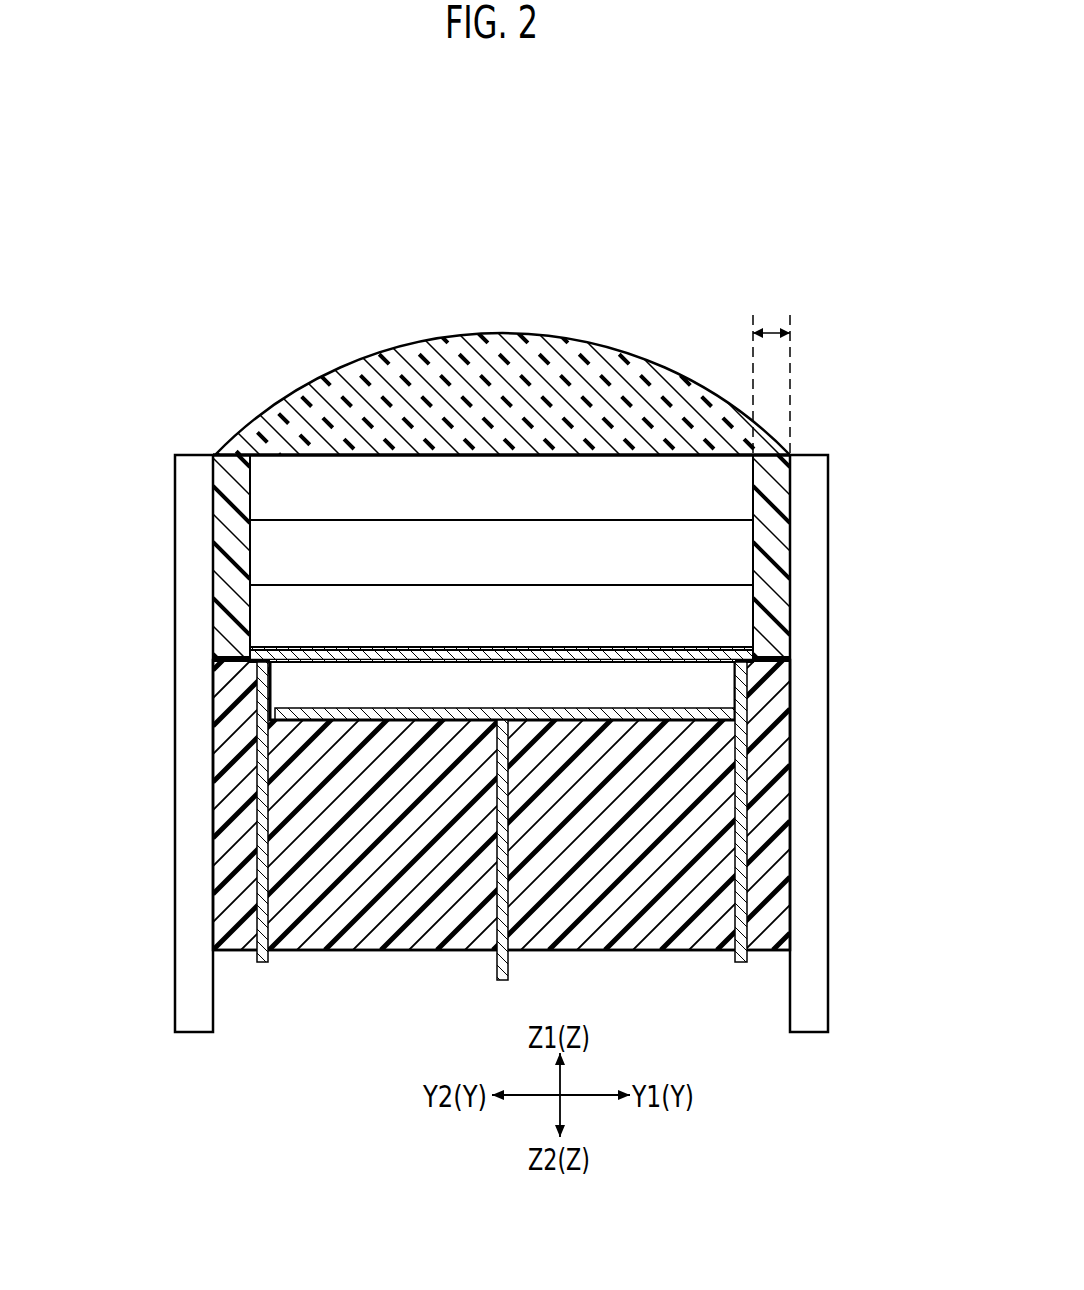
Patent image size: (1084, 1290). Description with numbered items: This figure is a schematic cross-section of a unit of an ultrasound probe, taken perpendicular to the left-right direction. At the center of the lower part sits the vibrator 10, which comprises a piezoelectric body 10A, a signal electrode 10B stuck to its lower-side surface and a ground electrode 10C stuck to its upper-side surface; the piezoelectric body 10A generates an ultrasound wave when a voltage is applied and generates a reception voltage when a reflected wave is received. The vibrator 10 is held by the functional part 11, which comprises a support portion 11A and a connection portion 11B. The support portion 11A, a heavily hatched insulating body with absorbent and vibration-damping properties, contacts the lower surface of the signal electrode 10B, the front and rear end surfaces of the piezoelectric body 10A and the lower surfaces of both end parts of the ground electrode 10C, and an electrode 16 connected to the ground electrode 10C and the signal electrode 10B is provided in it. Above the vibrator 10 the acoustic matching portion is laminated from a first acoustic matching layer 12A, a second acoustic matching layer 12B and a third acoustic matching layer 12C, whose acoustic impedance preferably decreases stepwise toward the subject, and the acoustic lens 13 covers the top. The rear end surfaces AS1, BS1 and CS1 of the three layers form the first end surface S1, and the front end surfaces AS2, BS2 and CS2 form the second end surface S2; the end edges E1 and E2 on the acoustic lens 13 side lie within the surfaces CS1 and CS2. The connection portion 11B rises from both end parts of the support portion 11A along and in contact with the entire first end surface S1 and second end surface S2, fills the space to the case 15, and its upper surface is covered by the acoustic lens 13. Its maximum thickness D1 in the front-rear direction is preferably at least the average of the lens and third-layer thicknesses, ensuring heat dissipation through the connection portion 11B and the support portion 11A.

The vibrator 10 is at (108, 640).
The piezoelectric body 10A is at (295, 684).
The signal electrode 10B is at (352, 720).
The ground electrode 10C is at (222, 658).
The functional part 11 is at (355, 955).
The support portion 11A is at (423, 930).
The connection portion 11B is at (782, 640).
The first acoustic matching layer 12A is at (532, 636).
The second acoustic matching layer 12B is at (532, 571).
The third acoustic matching layer 12C is at (532, 506).
The acoustic lens 13 is at (556, 360).
The case 15 is at (214, 985).
The electrode 16 is at (745, 965).
The end edge E1 is at (748, 440).
The end edge E2 is at (246, 428).
The maximum thickness D1 is at (771, 372).
The first end surface S1 is at (912, 425).
The rear end surface CS1 is at (790, 498).
The rear end surface BS1 is at (792, 533).
The rear end surface AS1 is at (780, 628).
The second end surface S2 is at (88, 365).
The front end surface CS2 is at (222, 478).
The front end surface BS2 is at (245, 527).
The front end surface AS2 is at (248, 607).